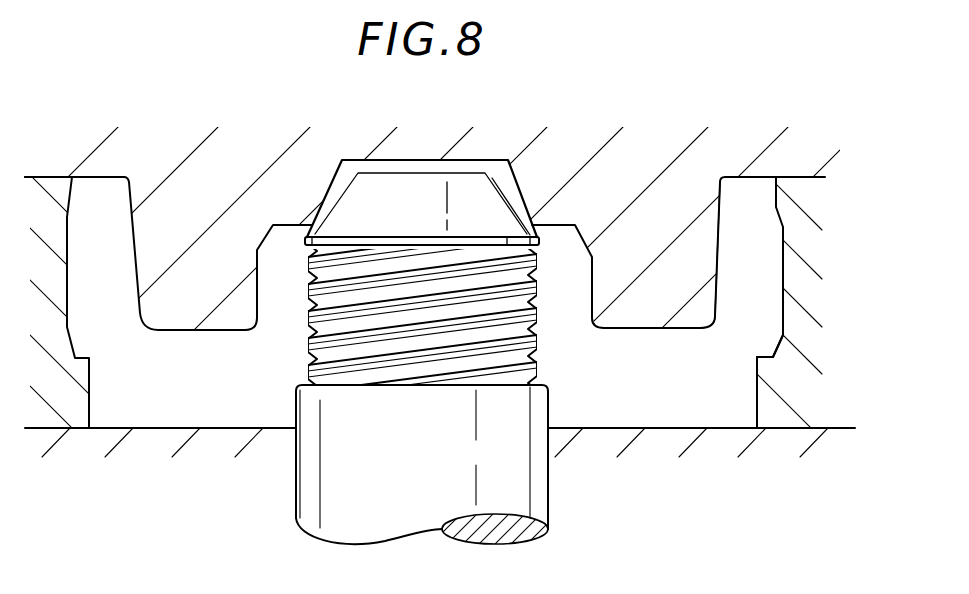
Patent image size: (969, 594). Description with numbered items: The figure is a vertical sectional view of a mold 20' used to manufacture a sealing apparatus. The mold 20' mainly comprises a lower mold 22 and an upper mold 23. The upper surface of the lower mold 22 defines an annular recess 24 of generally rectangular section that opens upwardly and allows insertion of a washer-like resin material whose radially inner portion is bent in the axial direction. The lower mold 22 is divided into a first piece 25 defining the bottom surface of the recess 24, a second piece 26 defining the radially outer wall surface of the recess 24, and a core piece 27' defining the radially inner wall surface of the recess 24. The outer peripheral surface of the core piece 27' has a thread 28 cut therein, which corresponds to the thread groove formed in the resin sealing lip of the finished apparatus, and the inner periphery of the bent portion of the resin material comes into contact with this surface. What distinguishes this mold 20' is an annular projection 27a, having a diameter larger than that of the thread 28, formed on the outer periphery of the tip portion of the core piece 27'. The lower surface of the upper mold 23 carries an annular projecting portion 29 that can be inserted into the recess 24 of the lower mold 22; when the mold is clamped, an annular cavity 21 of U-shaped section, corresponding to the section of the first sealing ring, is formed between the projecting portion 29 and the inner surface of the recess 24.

The mold 20' is at (109, 116).
The annular cavity 21 is at (142, 394).
The lower mold 22 is at (182, 504).
The upper mold 23 is at (628, 156).
The annular recess 24 is at (677, 393).
The first piece 25 is at (797, 426).
The second piece 26 is at (807, 293).
The annular projection 27a is at (540, 236).
The core piece 27' is at (461, 465).
The thread 28 is at (302, 277).
The annular projecting portion 29 is at (697, 258).